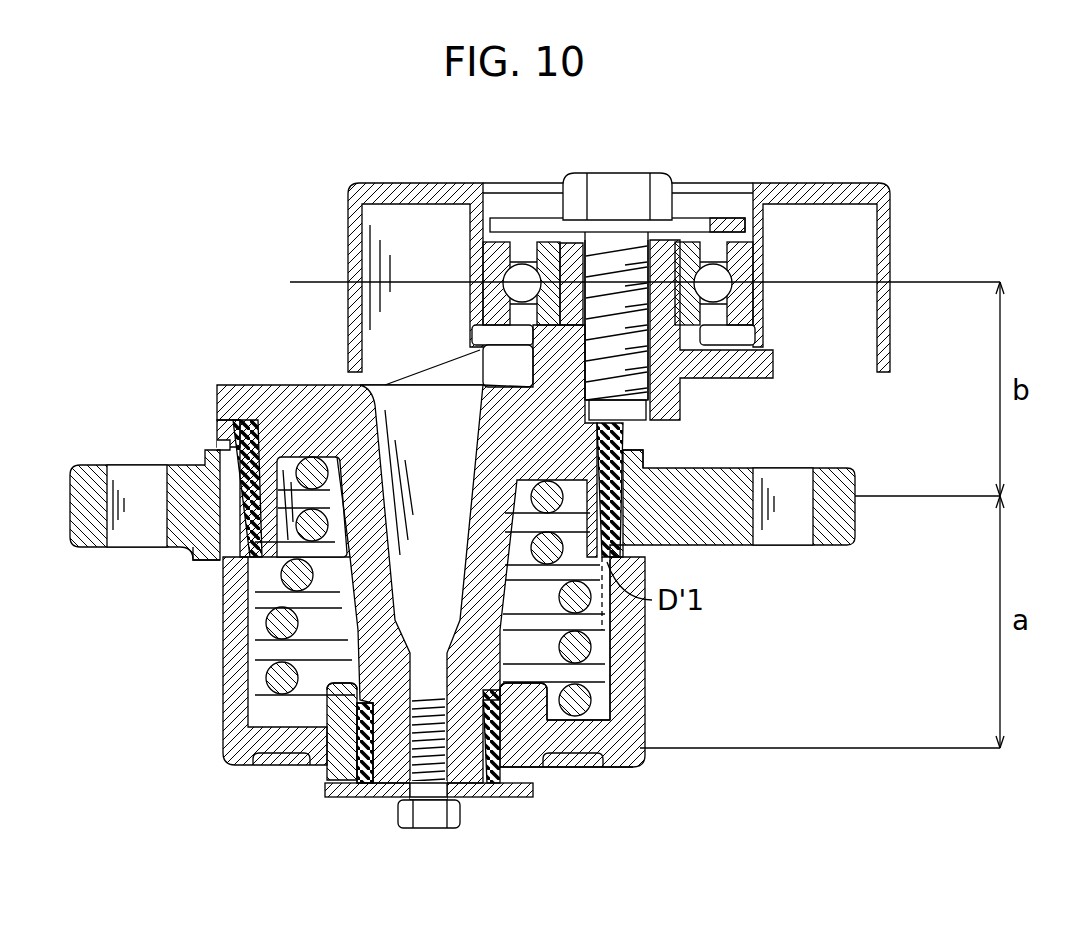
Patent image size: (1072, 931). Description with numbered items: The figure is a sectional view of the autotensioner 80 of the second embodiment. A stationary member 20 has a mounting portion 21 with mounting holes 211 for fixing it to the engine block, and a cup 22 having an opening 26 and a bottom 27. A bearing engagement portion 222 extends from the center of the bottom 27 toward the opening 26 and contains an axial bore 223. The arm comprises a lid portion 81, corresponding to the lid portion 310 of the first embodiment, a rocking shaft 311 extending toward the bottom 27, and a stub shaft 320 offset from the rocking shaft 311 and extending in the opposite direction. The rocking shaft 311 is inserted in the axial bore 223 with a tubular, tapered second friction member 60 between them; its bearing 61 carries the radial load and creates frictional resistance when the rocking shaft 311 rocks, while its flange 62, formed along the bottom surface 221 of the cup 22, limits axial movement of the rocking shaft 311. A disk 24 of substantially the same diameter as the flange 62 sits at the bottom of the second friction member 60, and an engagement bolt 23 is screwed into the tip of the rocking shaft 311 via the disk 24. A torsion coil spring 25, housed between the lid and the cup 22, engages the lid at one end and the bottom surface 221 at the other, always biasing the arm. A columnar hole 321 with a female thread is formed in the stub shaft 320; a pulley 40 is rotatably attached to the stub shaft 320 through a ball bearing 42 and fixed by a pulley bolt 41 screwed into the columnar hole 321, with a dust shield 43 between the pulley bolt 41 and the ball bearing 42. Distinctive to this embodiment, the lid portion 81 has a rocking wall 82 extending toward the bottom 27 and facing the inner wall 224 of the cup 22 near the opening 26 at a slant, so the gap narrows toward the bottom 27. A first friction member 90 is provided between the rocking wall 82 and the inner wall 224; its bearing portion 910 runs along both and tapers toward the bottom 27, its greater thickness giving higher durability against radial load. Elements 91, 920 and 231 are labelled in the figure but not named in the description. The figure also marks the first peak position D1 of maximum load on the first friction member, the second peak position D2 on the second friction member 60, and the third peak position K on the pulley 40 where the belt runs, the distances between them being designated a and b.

The tensioner 80 is at (162, 188).
The pulley 40 is at (853, 178).
The pulley bolt 41 is at (607, 195).
The ball bearing 42 is at (742, 282).
The dust shield 43 is at (500, 215).
The stub shaft 320 is at (733, 372).
The columnar hole 321 is at (630, 268).
The lid portion 310 is at (297, 395).
The rocking shaft 311 is at (345, 425).
The threaded portion 231 is at (430, 765).
The rocking wall 82 is at (266, 425).
The first friction member 90 is at (205, 427).
The tab 920 is at (217, 440).
The ring portion 91 is at (160, 482).
The bearing portion 910 is at (212, 545).
The mounting portion 21 is at (732, 562).
The mounting holes 211 is at (112, 547).
The opening 26 is at (642, 468).
The stationary member 20 is at (656, 676).
The torsion coil spring 25 is at (603, 633).
The bottom surface 221 is at (285, 710).
The bearing engagement portion 222 is at (272, 702).
The inner wall 224 is at (265, 575).
The bottom 27 is at (583, 738).
The cup 22 is at (644, 772).
The second friction member 60 is at (321, 785).
The bearing 61 is at (316, 778).
The flange 62 is at (360, 770).
The axial bore 223 is at (342, 793).
The disk 24 is at (533, 795).
The engagement bolt 23 is at (427, 845).
The second peak position D2 is at (533, 770).
The first peak position D1 is at (645, 468).
The third peak position K is at (897, 282).
The lid portion 81 is at (226, 373).